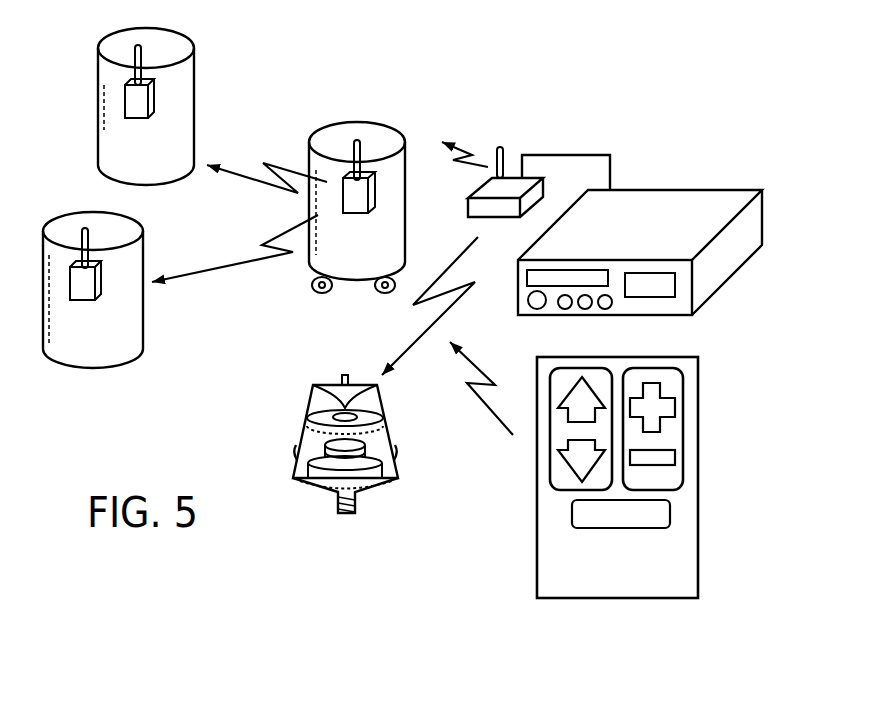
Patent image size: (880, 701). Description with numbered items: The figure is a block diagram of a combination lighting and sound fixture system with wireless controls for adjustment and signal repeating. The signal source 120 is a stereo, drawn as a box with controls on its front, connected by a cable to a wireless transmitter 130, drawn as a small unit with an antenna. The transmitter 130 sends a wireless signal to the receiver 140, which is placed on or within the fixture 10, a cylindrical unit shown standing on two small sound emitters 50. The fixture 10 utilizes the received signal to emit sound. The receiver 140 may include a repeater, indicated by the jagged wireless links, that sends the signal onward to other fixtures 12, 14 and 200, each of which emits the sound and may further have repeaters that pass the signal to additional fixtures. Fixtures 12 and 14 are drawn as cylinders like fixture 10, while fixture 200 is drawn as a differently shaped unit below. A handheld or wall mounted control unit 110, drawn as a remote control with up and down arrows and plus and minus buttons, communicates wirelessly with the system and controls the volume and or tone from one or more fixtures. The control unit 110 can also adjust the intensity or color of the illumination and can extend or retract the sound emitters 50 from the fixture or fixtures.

The fixture 10 is at (402, 208).
The fixture 12 is at (203, 68).
The fixture 14 is at (158, 313).
The sound emitters 50 is at (381, 295).
The control unit 110 is at (535, 465).
The signal source 120 is at (663, 190).
The wireless transmitter 130 is at (532, 177).
The receiver 140 is at (378, 170).
The fixture 200 is at (300, 443).